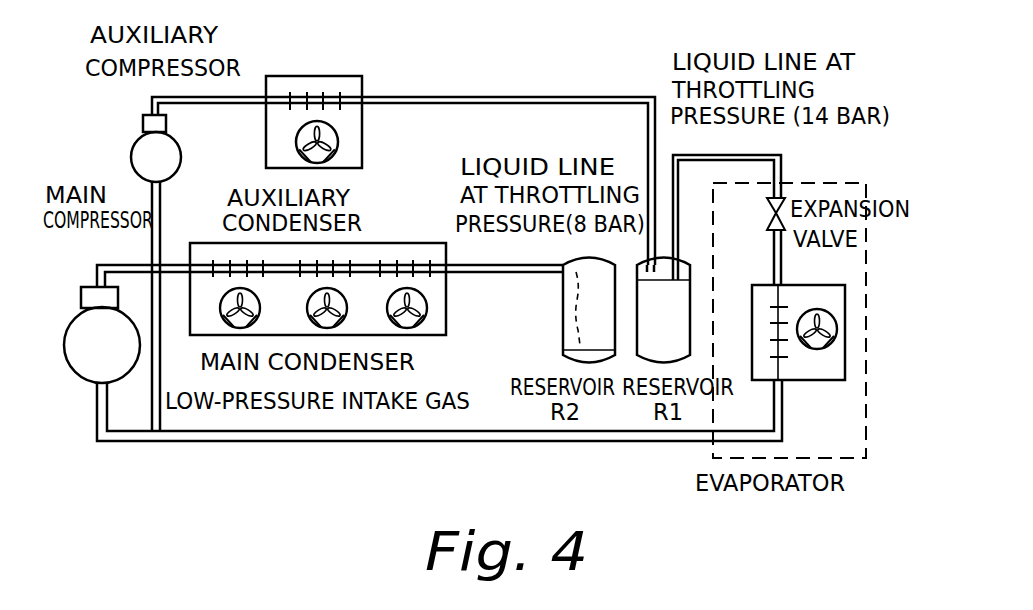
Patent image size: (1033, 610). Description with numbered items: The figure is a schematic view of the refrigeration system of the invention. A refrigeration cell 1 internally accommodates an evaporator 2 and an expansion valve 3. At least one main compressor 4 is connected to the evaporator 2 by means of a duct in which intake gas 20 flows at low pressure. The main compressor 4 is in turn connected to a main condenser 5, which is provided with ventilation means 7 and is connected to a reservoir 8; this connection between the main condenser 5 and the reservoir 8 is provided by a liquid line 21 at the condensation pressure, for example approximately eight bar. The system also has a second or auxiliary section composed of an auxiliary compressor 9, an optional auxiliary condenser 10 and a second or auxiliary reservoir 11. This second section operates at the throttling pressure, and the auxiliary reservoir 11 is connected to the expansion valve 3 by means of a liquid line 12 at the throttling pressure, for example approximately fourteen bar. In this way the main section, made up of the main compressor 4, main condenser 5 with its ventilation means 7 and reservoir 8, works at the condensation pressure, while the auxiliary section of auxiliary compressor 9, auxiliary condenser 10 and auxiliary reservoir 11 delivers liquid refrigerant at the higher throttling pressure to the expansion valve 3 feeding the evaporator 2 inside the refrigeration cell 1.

The refrigeration cell 1 is at (713, 448).
The evaporator 2 is at (832, 367).
The expansion valve 3 is at (768, 213).
The main compressor 4 is at (90, 375).
The main condenser 5 is at (213, 252).
The ventilation means 7 is at (337, 300).
The reservoir 8 is at (566, 350).
The auxiliary compressor 9 is at (143, 153).
The auxiliary condenser 10 is at (313, 75).
The auxiliary reservoir 11 is at (682, 320).
The liquid line at the throttling pressure 12 is at (676, 153).
The intake gas 20 is at (320, 442).
The liquid line at the condensation pressure 21 is at (538, 272).